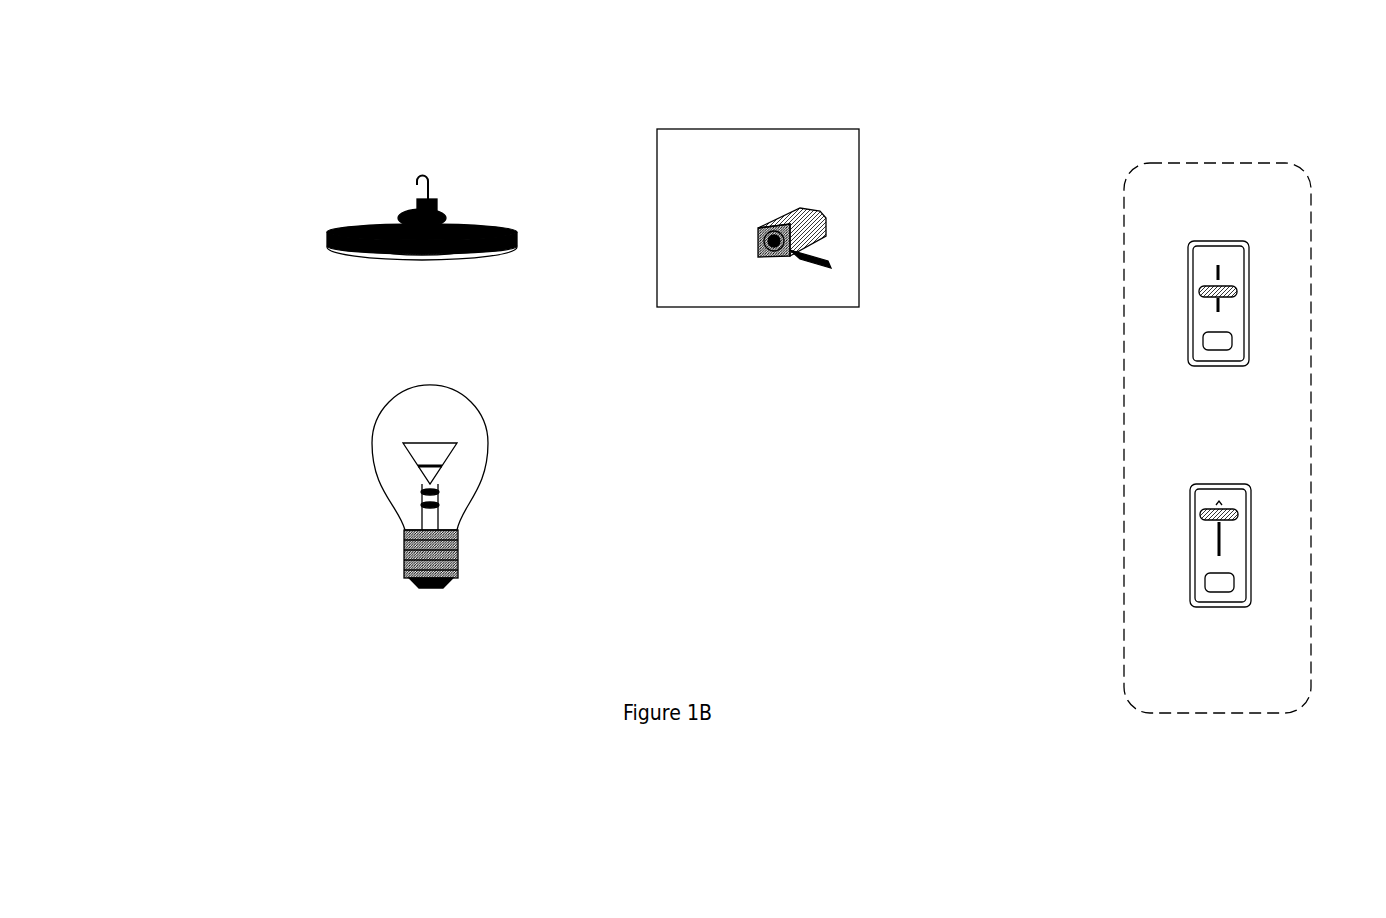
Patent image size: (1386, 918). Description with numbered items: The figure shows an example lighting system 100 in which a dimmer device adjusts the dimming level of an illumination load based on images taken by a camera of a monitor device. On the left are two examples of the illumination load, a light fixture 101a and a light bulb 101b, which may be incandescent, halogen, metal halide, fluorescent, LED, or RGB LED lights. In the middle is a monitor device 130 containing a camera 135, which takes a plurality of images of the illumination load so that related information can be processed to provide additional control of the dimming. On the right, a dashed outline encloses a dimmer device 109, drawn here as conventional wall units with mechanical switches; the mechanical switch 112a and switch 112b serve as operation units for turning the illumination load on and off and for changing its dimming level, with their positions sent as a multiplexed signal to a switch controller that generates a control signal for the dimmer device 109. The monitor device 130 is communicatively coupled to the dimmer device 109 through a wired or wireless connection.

The lighting system 100 is at (213, 100).
The illumination load 101a is at (330, 235).
The illumination load 101b is at (377, 438).
The monitor device 130 is at (716, 164).
The camera 135 is at (768, 228).
The dimmer device 109 is at (1152, 378).
The switch 112a is at (1238, 296).
The switch 112b is at (1235, 515).